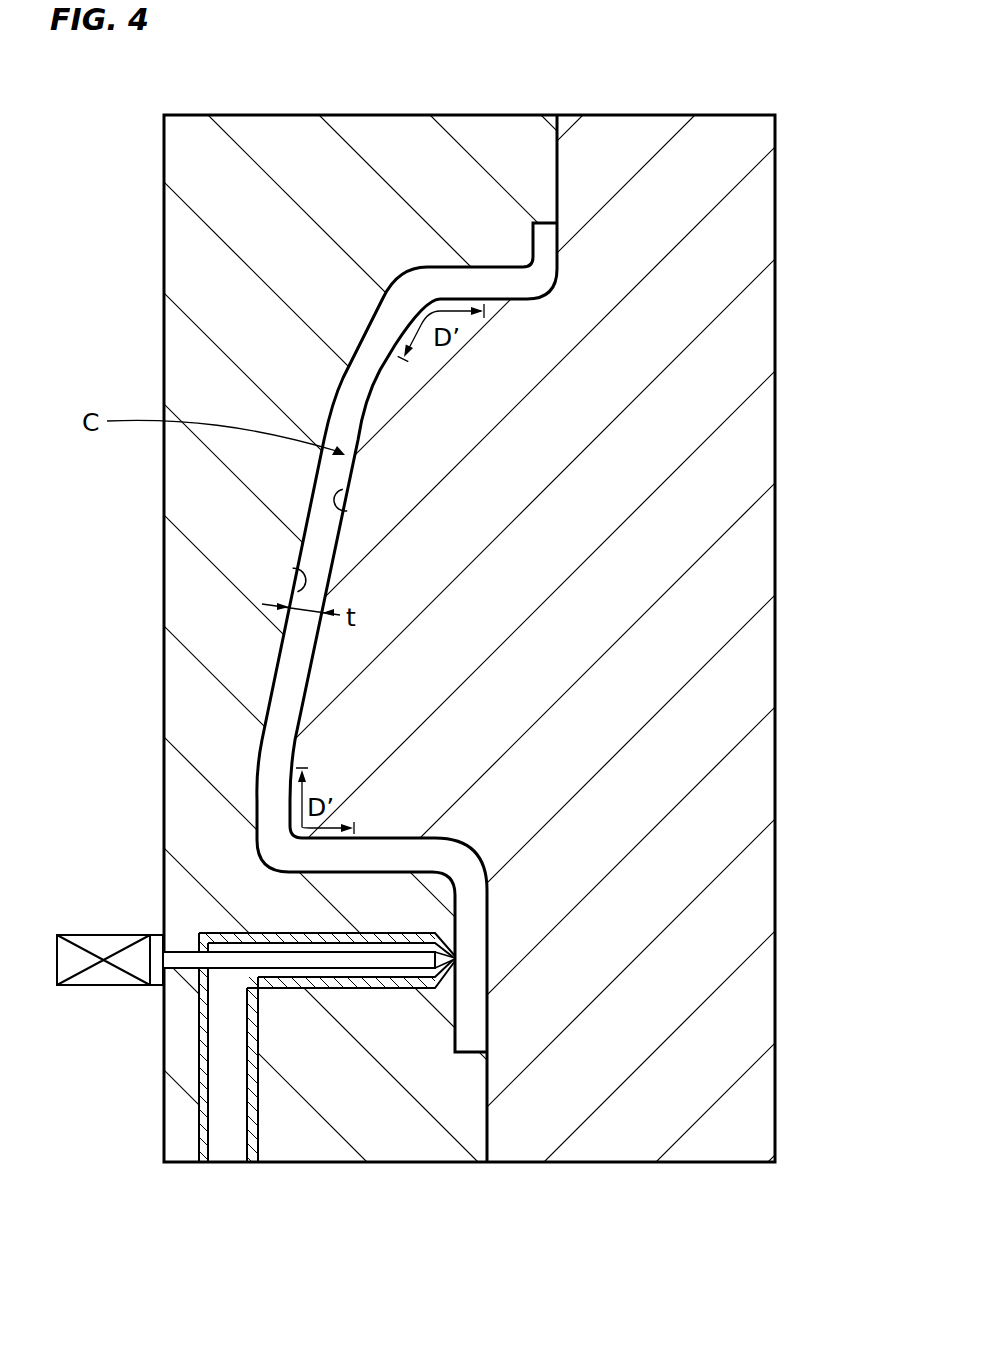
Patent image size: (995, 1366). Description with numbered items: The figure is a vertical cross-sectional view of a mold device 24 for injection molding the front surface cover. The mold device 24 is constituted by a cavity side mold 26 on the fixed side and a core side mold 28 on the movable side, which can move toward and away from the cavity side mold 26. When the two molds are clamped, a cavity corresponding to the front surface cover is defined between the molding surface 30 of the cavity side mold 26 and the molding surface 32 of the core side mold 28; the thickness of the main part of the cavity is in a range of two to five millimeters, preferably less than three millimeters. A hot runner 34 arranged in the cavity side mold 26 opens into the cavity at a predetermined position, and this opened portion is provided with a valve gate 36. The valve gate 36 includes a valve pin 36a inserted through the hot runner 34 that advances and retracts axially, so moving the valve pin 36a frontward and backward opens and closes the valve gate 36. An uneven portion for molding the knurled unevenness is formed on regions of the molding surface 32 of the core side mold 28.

The mold device 24 is at (452, 1331).
The cavity side mold 26 is at (362, 114).
The core side mold 28 is at (665, 114).
The molding surface 30 is at (290, 594).
The molding surface 32 is at (345, 491).
The hot runner 34 is at (260, 933).
The valve gate 36 is at (440, 960).
The valve pin 36a is at (233, 970).